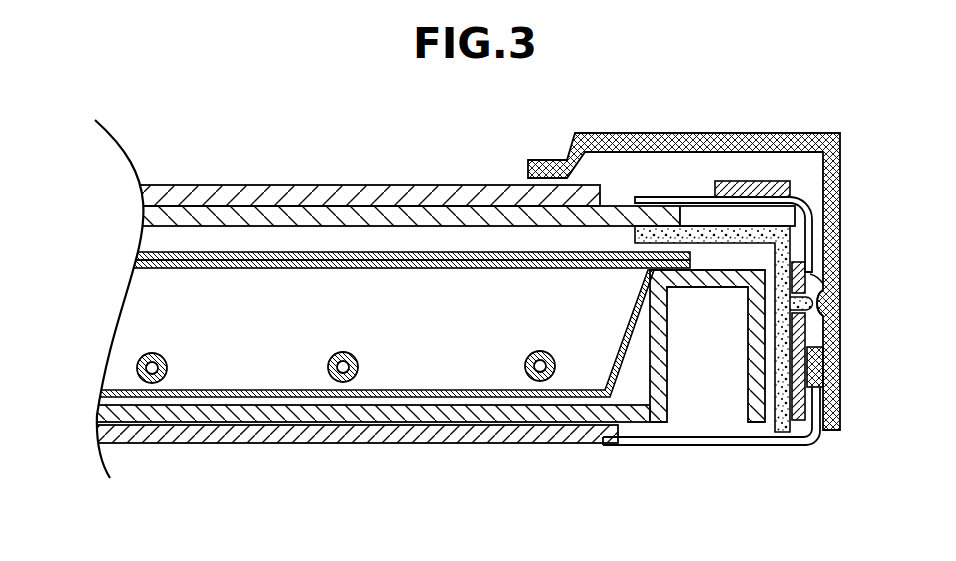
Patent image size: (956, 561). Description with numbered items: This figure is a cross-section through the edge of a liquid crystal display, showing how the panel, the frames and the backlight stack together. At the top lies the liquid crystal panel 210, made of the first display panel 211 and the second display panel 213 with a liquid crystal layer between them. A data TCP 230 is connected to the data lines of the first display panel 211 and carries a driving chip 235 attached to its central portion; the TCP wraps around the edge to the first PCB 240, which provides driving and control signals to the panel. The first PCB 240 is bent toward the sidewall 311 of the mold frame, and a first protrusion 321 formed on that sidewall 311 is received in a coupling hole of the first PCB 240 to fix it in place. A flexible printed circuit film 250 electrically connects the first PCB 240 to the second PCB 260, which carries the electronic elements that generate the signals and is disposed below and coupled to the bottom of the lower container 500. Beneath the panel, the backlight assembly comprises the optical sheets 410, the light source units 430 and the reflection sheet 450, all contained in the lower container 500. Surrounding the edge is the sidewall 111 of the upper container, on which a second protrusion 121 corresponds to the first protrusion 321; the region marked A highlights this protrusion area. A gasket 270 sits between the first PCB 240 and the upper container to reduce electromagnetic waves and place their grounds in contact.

The sidewall of the upper container 111 is at (840, 205).
The second protrusion 121 is at (841, 300).
The liquid crystal panel 210 is at (370, 161).
The first display panel 211 is at (290, 222).
The second display panel 213 is at (222, 196).
The data TCP 230 is at (690, 197).
The driving chip 235 is at (765, 181).
The first PCB 240 is at (798, 422).
The flexible printed circuit film 250 is at (680, 446).
The second PCB 260 is at (228, 415).
The gasket 270 is at (817, 389).
The sidewall of the mold frame 311 is at (782, 433).
The first protrusion 321 is at (841, 318).
The optical sheets 410 is at (139, 253).
The light source unit 430 is at (137, 367).
The reflection sheet 450 is at (98, 395).
The lower container 500 is at (175, 435).
The region A is at (840, 276).